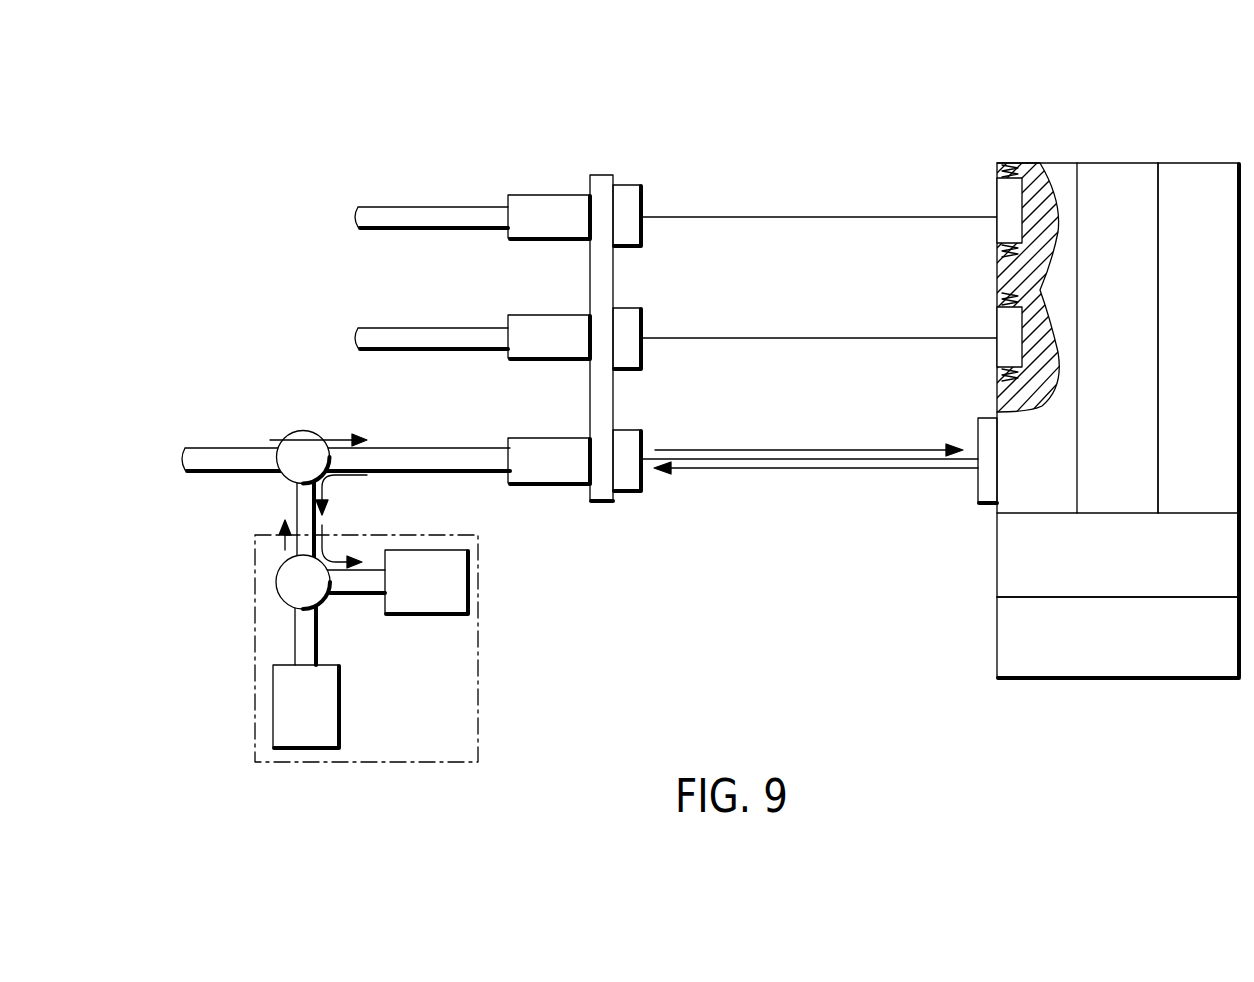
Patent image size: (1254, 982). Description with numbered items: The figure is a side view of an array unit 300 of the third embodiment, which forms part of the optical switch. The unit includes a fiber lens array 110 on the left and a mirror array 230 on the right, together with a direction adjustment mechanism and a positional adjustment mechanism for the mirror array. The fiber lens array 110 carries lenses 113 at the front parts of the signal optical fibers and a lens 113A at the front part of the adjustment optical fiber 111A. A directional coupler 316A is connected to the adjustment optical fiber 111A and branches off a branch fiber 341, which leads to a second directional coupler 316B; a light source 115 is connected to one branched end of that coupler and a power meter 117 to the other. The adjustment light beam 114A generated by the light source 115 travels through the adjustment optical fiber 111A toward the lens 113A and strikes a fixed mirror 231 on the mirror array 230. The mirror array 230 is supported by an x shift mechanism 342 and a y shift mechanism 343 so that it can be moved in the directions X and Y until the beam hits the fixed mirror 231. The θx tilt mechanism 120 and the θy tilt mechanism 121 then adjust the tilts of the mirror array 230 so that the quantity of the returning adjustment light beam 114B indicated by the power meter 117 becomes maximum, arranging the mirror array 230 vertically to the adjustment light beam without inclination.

The array unit 300 is at (250, 175).
The fiber lens array 110 is at (600, 175).
The lenses 113 is at (640, 200).
The lens 113A is at (624, 491).
The adjustment optical fiber 111A is at (497, 475).
The adjustment light beam 114A is at (833, 450).
The adjustment light beam 114B is at (833, 470).
The fixed mirror 231 is at (977, 485).
The mirror array 230 is at (1064, 165).
The θy tilt mechanism 121 is at (1117, 165).
The θx tilt mechanism 120 is at (1194, 165).
The y shift mechanism 343 is at (1010, 558).
The x shift mechanism 342 is at (1010, 633).
The directional coupler 316A is at (303, 430).
The directional coupler 316B is at (276, 582).
The branch fiber 341 is at (296, 505).
The power meter 117 is at (455, 590).
The light source 115 is at (310, 727).